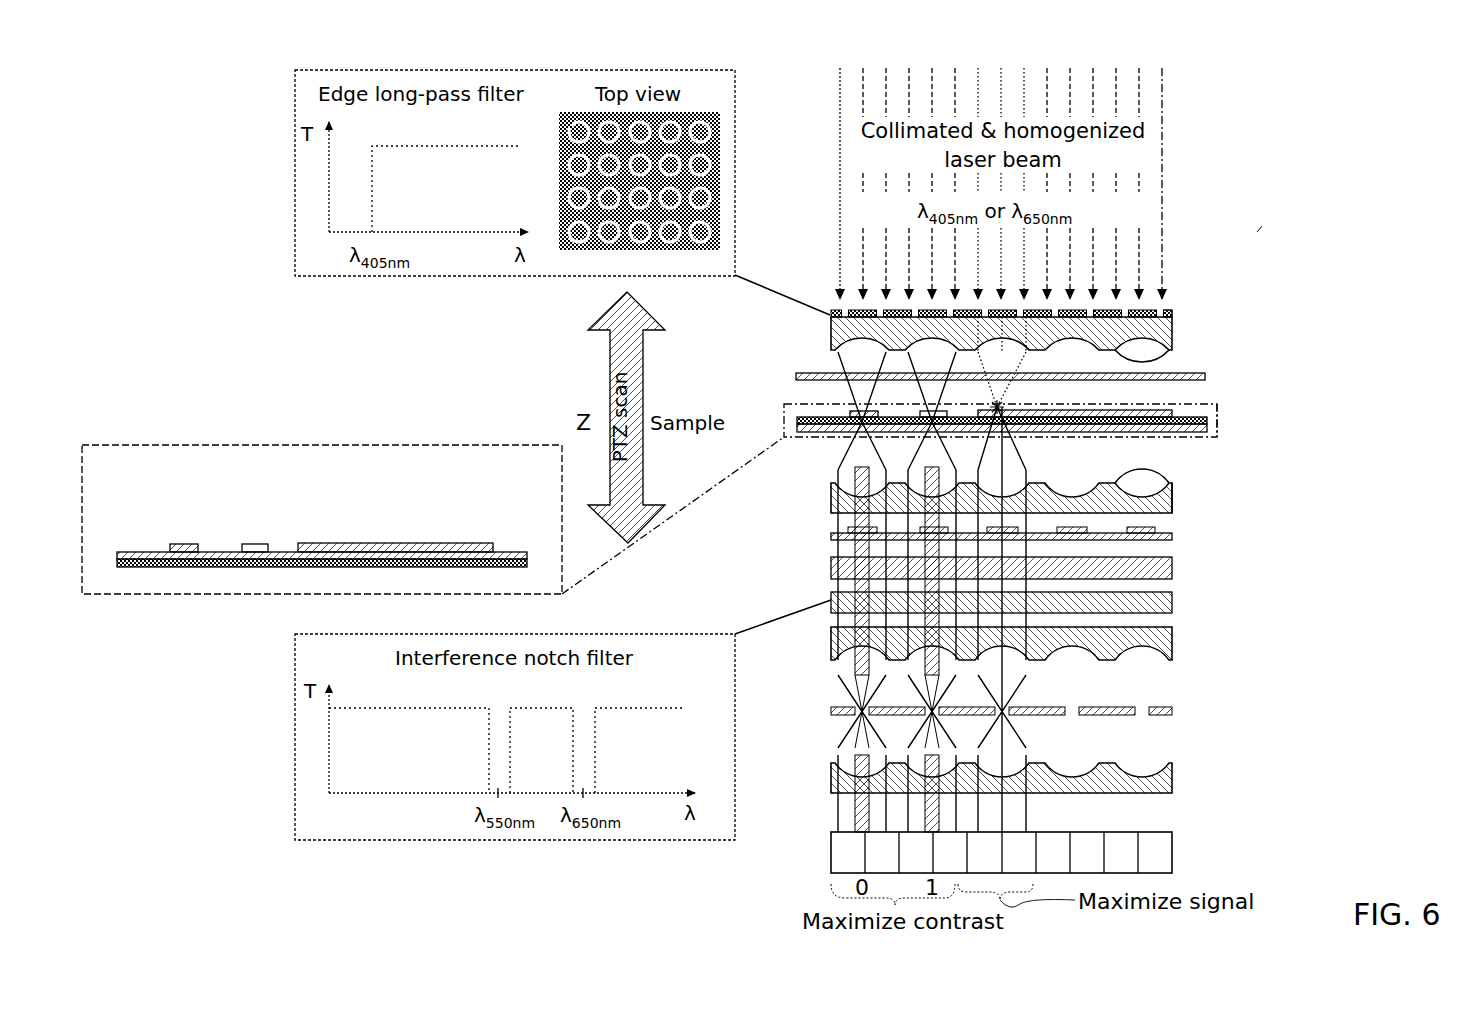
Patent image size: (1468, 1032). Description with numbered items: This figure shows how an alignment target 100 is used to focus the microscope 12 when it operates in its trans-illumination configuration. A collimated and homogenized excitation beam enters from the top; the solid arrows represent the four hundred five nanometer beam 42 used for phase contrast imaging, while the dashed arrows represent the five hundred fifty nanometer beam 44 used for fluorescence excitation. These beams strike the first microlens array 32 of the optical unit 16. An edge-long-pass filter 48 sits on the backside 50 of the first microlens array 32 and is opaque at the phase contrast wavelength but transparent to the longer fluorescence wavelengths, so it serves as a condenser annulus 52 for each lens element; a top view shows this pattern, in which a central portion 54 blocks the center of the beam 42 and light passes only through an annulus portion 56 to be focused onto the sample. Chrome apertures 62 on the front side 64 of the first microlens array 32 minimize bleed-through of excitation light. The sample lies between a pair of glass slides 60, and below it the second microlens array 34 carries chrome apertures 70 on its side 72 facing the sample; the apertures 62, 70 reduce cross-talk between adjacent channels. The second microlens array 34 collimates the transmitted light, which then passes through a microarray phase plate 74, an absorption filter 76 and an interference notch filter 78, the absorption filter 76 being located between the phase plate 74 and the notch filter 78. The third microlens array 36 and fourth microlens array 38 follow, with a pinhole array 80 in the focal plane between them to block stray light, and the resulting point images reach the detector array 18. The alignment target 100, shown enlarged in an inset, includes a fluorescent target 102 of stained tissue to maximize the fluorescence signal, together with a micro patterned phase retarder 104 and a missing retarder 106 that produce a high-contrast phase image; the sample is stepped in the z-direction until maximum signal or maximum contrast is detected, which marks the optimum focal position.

The microscope 12 is at (1260, 230).
The optical unit 16 is at (1222, 461).
The detector array 18 is at (1160, 851).
The first microlens array 32 is at (1173, 350).
The second microlens array 34 is at (1173, 500).
The third microlens array 36 is at (1173, 645).
The fourth microlens array 38 is at (1173, 778).
The 405 nm excitation beam 42 is at (958, 68).
The 550 nm excitation beam 44 is at (1024, 68).
The edge-long-pass filter 48 is at (1173, 313).
The backside 50 is at (1166, 310).
The condenser annulus 52 is at (580, 108).
The central portion 54 is at (557, 127).
The annulus portion 56 is at (568, 120).
The glass slides 60 is at (1200, 384).
The chrome apertures 62 is at (1175, 356).
The front side 64 is at (1205, 377).
The chrome apertures 70 is at (1175, 486).
The side 72 is at (1163, 472).
The microarray phase plate 74 is at (1173, 537).
The absorption filter 76 is at (1173, 568).
The interference notch filter 78 is at (1173, 602).
The pinhole array 80 is at (1173, 711).
The alignment target 100 is at (507, 552).
The fluorescent target 102 is at (396, 543).
The micro patterned phase retarder 104 is at (185, 544).
The missing retarder 106 is at (255, 544).